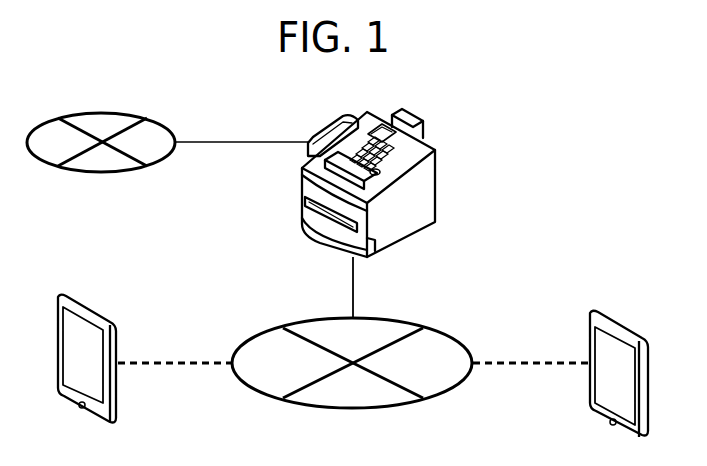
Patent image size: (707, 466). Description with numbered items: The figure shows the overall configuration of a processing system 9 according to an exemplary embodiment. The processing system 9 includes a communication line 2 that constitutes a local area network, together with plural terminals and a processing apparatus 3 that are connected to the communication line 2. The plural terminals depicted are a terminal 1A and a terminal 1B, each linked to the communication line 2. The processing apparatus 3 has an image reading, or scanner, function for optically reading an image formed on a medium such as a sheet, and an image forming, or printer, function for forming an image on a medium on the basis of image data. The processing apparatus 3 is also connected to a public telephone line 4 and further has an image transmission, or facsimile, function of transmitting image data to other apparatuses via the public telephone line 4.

The terminal 1A is at (103, 311).
The terminal 1B is at (590, 320).
The communication line 2 is at (390, 322).
The processing apparatus 3 is at (436, 194).
The public telephone line 4 is at (108, 173).
The processing system 9 is at (577, 198).